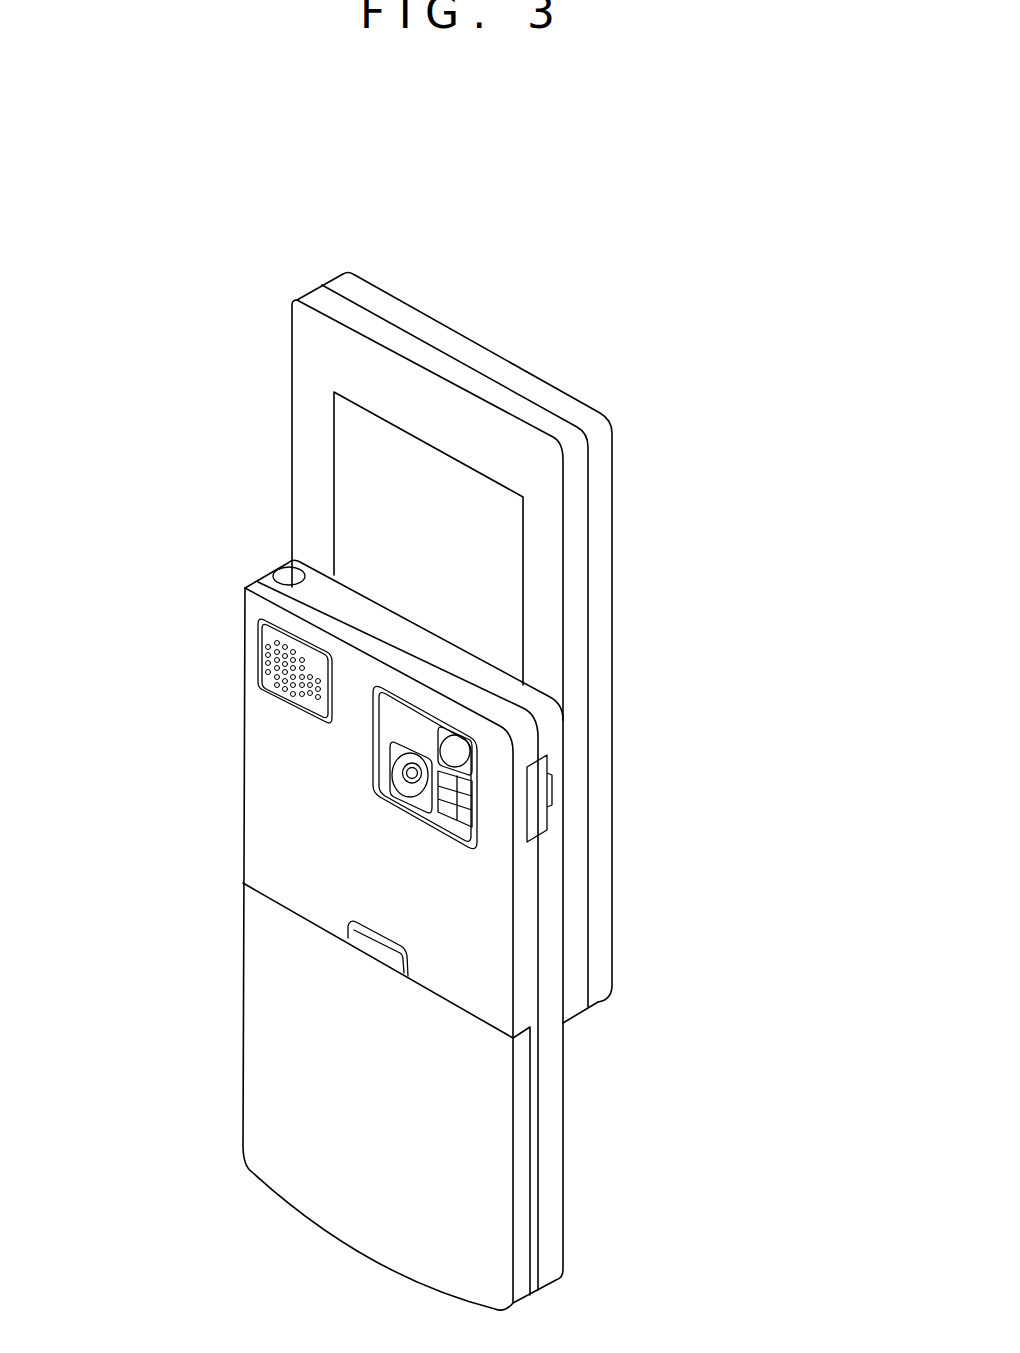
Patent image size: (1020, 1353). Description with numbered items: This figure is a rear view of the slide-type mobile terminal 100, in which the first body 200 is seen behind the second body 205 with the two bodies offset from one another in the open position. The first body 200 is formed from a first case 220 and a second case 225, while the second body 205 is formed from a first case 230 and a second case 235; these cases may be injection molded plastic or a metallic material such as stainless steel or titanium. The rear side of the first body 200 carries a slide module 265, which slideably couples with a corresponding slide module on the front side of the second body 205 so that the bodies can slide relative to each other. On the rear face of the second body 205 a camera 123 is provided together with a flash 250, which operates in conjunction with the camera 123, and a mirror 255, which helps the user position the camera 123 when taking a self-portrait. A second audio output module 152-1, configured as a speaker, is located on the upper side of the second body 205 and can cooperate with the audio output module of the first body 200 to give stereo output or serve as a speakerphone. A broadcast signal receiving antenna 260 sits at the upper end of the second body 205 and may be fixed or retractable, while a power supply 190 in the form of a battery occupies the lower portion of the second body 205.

The mobile terminal 100 is at (630, 336).
The first body 200 is at (258, 381).
The second body 205 is at (215, 781).
The first case 220 is at (342, 282).
The second case 225 is at (325, 297).
The slide module 265 is at (326, 486).
The broadcast signal receiving antenna 260 is at (280, 571).
The second audio output module 152-1 is at (267, 663).
The flash 250 is at (472, 832).
The mirror 255 is at (455, 748).
The camera 123 is at (412, 778).
The power supply 190 is at (260, 982).
The second case 235 is at (523, 988).
The first case 230 is at (552, 1055).